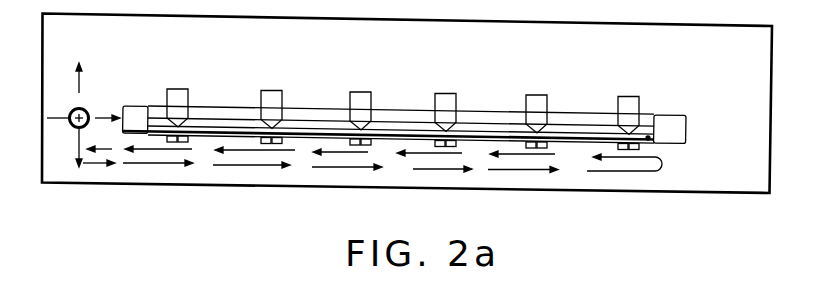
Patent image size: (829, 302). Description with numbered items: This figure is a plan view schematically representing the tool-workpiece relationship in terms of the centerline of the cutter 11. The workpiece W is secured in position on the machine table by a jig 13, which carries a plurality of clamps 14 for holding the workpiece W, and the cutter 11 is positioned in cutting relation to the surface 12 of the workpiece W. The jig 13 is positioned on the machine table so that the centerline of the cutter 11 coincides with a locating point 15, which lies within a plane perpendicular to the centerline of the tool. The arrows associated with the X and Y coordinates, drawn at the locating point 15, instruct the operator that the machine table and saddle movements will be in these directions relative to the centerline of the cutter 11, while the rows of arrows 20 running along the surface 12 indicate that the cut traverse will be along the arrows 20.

The cutter 11 is at (71, 126).
The surface 12 is at (205, 131).
The jig 13 is at (772, 89).
The clamps 14 is at (350, 92).
The locating point 15 is at (71, 110).
The arrows 20 is at (333, 150).
The workpiece W is at (648, 138).